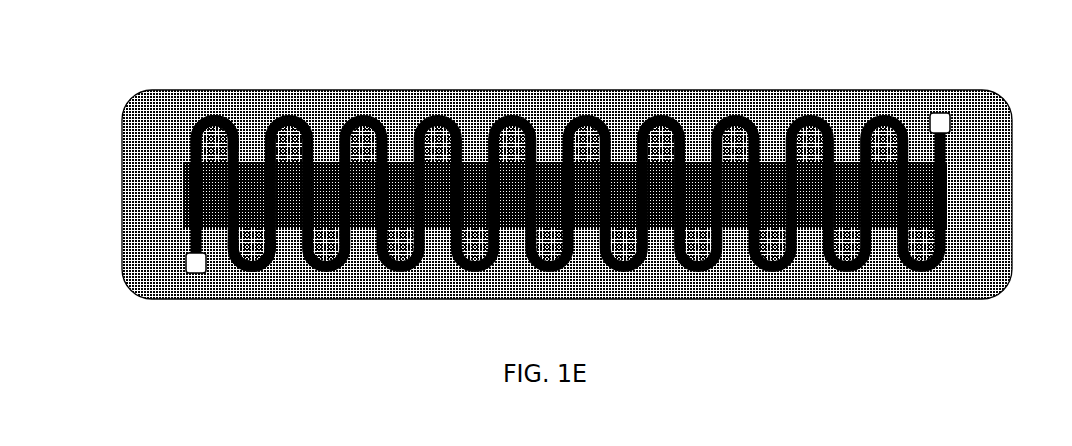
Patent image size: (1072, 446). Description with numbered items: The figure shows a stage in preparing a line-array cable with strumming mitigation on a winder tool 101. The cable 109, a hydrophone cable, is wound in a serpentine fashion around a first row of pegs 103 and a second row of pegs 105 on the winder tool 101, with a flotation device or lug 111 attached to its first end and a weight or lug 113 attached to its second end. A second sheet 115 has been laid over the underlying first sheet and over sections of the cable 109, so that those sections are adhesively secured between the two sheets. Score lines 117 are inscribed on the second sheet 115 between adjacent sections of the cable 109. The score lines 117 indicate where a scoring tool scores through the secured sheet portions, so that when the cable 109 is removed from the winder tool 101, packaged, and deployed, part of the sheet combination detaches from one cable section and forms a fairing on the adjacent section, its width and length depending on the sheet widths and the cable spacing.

The winder tool 101 is at (123, 185).
The first row of pegs 103 is at (210, 142).
The second row of pegs 105 is at (253, 262).
The cable 109 is at (198, 120).
The flotation device or lug 111 is at (196, 276).
The weight or lug 113 is at (940, 112).
The second sheet 115 is at (184, 216).
The score lines 117 is at (362, 202).